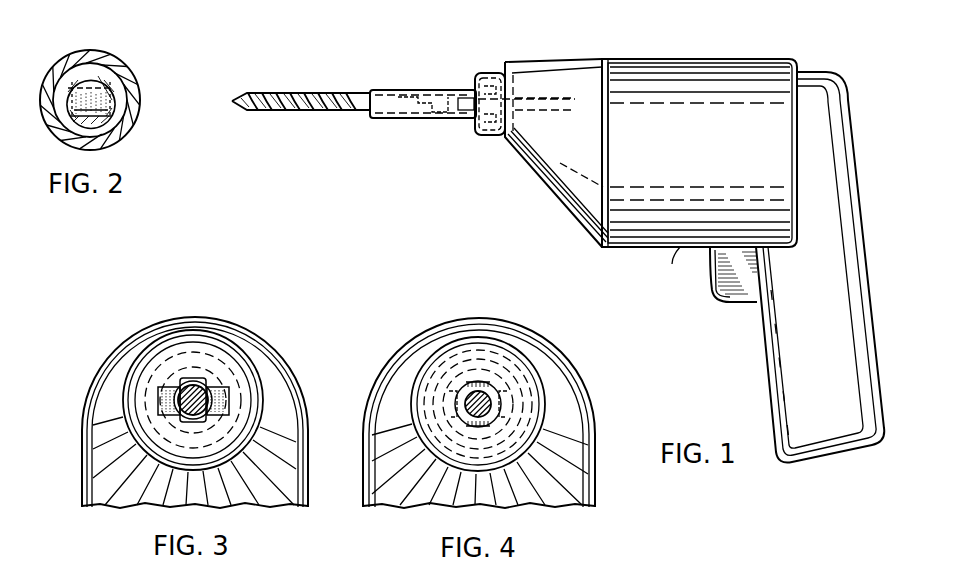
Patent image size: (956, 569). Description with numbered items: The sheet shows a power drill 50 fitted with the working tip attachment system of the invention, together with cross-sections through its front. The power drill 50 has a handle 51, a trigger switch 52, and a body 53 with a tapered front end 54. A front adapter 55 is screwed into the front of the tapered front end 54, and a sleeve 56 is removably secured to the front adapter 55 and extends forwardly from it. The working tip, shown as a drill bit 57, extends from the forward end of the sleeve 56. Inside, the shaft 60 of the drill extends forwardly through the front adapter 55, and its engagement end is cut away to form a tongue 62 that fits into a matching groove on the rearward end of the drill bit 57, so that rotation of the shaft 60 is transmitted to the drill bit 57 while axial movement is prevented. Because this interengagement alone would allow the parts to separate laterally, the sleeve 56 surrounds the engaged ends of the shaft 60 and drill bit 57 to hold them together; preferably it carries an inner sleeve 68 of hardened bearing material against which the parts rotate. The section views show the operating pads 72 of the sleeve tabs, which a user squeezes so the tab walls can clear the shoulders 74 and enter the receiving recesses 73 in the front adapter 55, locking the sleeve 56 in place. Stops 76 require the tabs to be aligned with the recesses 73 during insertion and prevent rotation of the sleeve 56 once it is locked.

In FIG. 1, the power drill 50 is at (678, 46).
In FIG. 1, the handle 51 is at (768, 375).
In FIG. 1, the trigger switch 52 is at (730, 305).
In FIG. 1, the body 53 is at (682, 254).
In FIG. 1, the tapered front end 54 is at (573, 207).
In FIG. 3, the tapered front end 54 is at (86, 464).
In FIG. 4, the tapered front end 54 is at (578, 482).
In FIG. 1, the front adapter 55 is at (488, 73).
In FIG. 3, the front adapter 55 is at (258, 402).
In FIG. 4, the front adapter 55 is at (520, 432).
In FIG. 1, the sleeve 56 is at (415, 90).
In FIG. 2, the sleeve 56 is at (118, 66).
In FIG. 3, the sleeve 56 is at (193, 385).
In FIG. 1, the drill bit 57 is at (294, 92).
In FIG. 2, the drill bit 57 is at (78, 118).
In FIG. 1, the shaft 60 is at (414, 112).
In FIG. 2, the shaft 60 is at (86, 66).
In FIG. 4, the shaft 60 is at (487, 399).
In FIG. 2, the tongue 62 is at (112, 106).
In FIG. 2, the inner sleeve 68 is at (118, 85).
In FIG. 3, the inner sleeve 68 is at (206, 392).
In FIG. 3, the operating pads 72 is at (160, 393).
In FIG. 4, the receiving recesses 73 is at (506, 398).
In FIG. 4, the shoulders 74 is at (508, 411).
In FIG. 4, the stops 76 is at (478, 382).